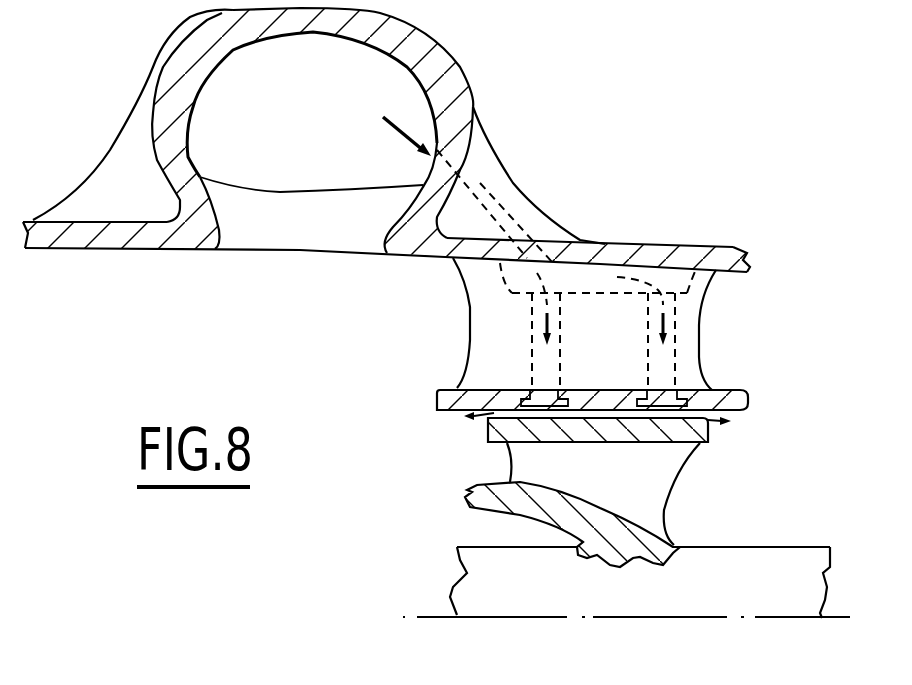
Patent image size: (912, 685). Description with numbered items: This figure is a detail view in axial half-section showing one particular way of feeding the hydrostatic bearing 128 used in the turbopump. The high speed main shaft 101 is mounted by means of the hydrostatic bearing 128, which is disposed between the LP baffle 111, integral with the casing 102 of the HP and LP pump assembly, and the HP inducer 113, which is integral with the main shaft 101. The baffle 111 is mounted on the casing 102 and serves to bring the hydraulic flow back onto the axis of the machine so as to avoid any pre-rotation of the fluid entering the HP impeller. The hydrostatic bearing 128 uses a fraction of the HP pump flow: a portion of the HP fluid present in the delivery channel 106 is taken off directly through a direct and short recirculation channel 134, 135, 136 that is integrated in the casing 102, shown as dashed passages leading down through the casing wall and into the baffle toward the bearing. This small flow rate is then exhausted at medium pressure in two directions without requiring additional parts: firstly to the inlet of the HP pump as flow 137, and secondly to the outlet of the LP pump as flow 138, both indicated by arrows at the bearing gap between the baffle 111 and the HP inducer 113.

The high speed main shaft 101 is at (760, 557).
The casing 102 is at (670, 255).
The delivery channel 106 is at (268, 40).
The baffle 111 is at (470, 356).
The HP inducer 113 is at (527, 455).
The hydrostatic bearing 128 is at (748, 418).
The recirculation channel 134 is at (520, 223).
The recirculation channel 135 is at (547, 367).
The recirculation channel 136 is at (675, 345).
The flow 137 is at (474, 416).
The flow 138 is at (722, 421).